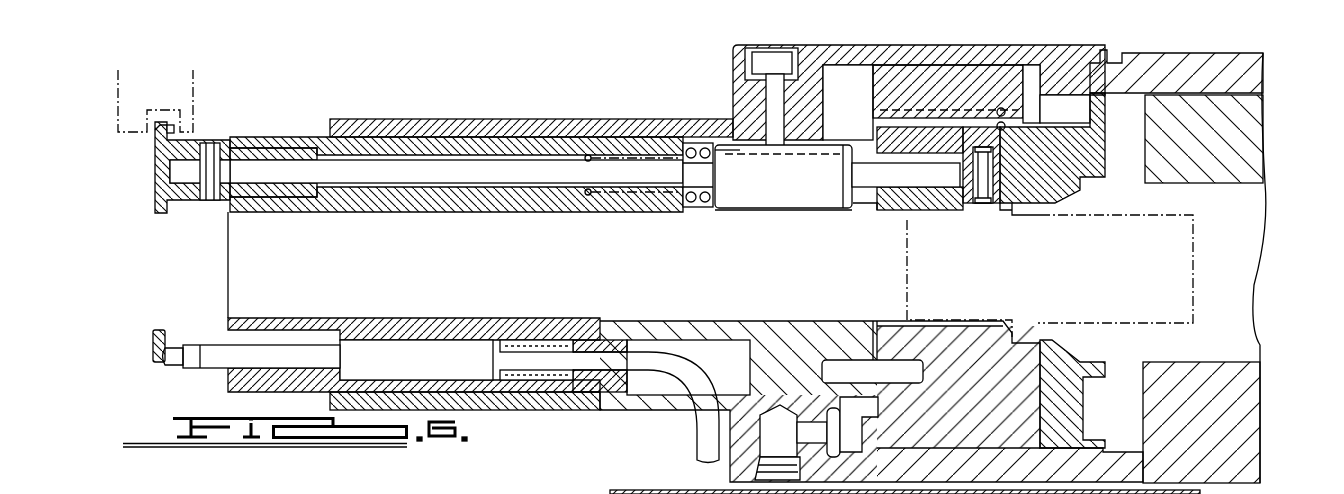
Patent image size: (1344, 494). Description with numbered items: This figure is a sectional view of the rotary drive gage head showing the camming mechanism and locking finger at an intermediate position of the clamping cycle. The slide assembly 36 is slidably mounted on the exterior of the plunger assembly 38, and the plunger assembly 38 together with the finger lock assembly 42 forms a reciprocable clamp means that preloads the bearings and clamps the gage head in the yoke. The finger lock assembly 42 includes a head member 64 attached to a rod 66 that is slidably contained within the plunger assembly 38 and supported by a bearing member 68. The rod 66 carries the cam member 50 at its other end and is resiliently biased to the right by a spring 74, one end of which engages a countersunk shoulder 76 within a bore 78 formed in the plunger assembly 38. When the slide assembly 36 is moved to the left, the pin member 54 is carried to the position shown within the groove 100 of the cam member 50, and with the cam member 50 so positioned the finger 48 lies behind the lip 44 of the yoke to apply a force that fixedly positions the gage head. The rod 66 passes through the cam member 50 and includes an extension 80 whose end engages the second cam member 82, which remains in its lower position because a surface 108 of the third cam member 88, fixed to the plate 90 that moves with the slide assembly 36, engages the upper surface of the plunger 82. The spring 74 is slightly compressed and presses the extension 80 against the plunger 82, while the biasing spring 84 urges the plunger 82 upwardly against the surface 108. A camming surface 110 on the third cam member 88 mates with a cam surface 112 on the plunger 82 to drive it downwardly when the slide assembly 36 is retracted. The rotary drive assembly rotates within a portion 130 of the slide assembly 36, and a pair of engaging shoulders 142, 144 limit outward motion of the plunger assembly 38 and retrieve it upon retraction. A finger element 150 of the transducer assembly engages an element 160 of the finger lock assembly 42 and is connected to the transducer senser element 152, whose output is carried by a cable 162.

The slide assembly 36 is at (750, 480).
The plunger assembly 38 is at (262, 391).
The finger lock assembly 42 is at (214, 203).
The lip 44 is at (205, 120).
The finger 48 is at (155, 130).
The cam member 50 is at (807, 193).
The pin member 54 is at (783, 176).
The head member 64 is at (188, 142).
The rod 66 is at (352, 165).
The bearing member 68 is at (285, 150).
The spring 74 is at (676, 143).
The countersunk shoulder 76 is at (601, 220).
The bore 78 is at (410, 165).
The extension 80 is at (903, 190).
The second cam member 82 is at (1002, 210).
The biasing spring 84 is at (988, 212).
The third cam member 88 is at (878, 112).
The plate 90 is at (736, 55).
The groove 100 is at (725, 160).
The surface 108 is at (903, 118).
The camming surface 110 is at (998, 126).
The mating cam surface 112 is at (990, 133).
The portion 130 is at (1234, 139).
The engaging shoulder 142 is at (838, 452).
The engaging shoulder 144 is at (925, 390).
The finger element 150 is at (175, 366).
The transducer senser element 152 is at (385, 345).
The element 160 is at (150, 342).
The cable 162 is at (697, 445).